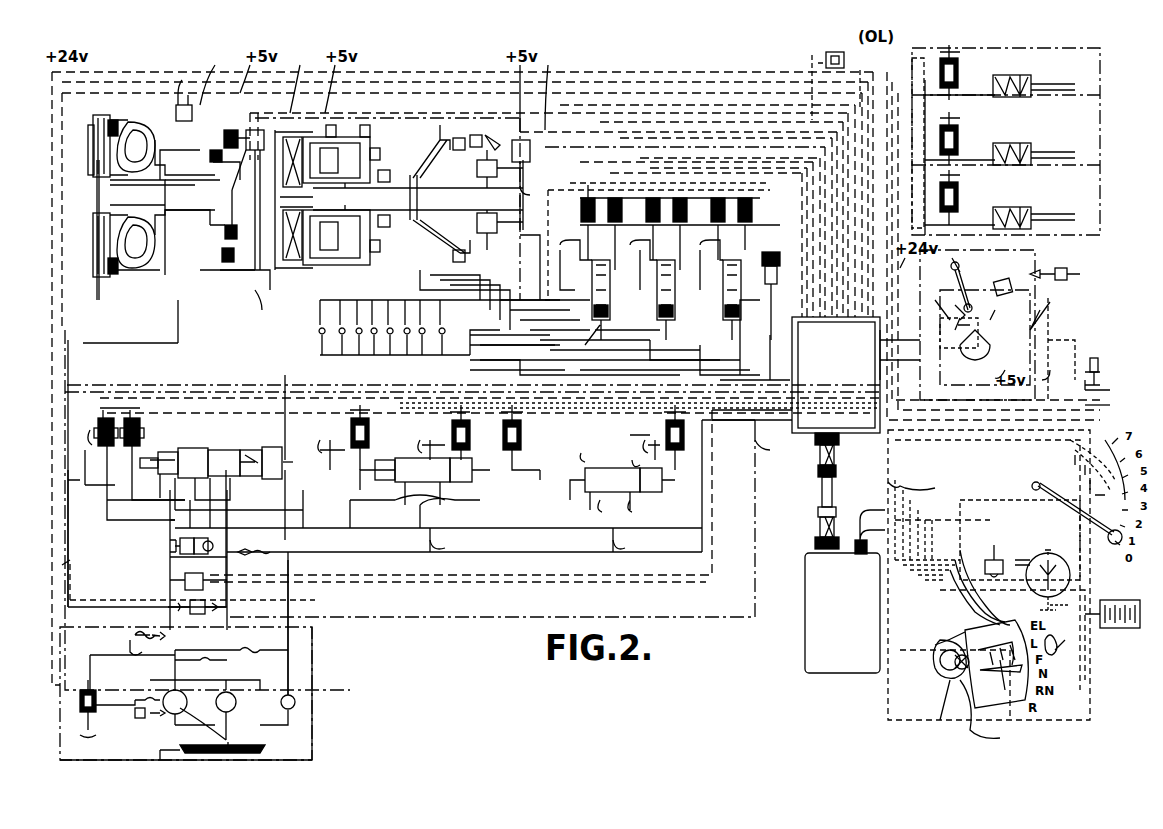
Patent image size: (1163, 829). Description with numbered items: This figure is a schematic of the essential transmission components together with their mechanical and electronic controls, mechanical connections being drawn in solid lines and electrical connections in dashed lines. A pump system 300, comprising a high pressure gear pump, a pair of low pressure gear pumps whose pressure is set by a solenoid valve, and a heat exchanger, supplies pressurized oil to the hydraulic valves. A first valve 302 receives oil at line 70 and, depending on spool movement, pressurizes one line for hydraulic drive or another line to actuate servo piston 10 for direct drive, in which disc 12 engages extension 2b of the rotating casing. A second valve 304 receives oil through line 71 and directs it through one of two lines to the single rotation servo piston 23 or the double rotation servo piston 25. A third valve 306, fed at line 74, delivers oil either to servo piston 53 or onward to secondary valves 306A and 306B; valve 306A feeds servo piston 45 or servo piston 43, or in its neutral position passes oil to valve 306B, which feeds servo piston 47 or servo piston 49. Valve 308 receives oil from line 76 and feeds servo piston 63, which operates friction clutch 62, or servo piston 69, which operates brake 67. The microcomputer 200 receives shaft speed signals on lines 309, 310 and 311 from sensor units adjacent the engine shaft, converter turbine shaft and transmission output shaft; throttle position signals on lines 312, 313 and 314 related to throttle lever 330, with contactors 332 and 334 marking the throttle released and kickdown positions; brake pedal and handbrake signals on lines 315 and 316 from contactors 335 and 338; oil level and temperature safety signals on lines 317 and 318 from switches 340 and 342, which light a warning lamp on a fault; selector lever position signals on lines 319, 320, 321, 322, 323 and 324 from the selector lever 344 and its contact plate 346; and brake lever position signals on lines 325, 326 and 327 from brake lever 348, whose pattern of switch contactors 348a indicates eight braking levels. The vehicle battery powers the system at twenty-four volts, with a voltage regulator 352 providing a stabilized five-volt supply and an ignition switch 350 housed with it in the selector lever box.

The servo piston 10 is at (96, 118).
The disc 12 is at (95, 158).
The extension of the rotating casing 2b is at (112, 118).
The single rotation servo piston 23 is at (210, 158).
The double rotation servo piston 25 is at (246, 135).
The servo piston 43 is at (336, 201).
The servo piston 45 is at (365, 140).
The servo piston 47 is at (395, 135).
The servo piston 49 is at (382, 152).
The servo piston 53 is at (307, 198).
The friction clutch 62 is at (445, 125).
The servo piston 63 is at (436, 180).
The brake 67 is at (475, 135).
The servo piston 69 is at (492, 135).
The line 70 is at (215, 505).
The line 71 is at (451, 543).
The line 74 is at (636, 543).
The line 76 is at (758, 290).
The microcomputer 200 is at (860, 418).
The pump system 300 is at (320, 700).
The first valve 302 is at (285, 420).
The second valve 304 is at (440, 458).
The third valve 306 is at (648, 495).
The secondary valve 306A is at (600, 340).
The secondary valve 306B is at (666, 340).
The valve 308 is at (740, 340).
The line 309 is at (218, 76).
The line 310 is at (305, 80).
The line 311 is at (564, 89).
The line 312 is at (947, 285).
The line 313 is at (1030, 330).
The line 314 is at (962, 307).
The line 315 is at (1062, 362).
The line 316 is at (1095, 412).
The line 317 is at (836, 87).
The line 318 is at (755, 440).
The line 319 is at (910, 705).
The line 320 is at (920, 718).
The line 321 is at (962, 548).
The line 322 is at (967, 581).
The line 323 is at (962, 580).
The line 324 is at (935, 648).
The line 325 is at (893, 460).
The line 326 is at (895, 482).
The line 327 is at (927, 491).
The throttle lever 330 is at (960, 268).
The contactor 332 is at (959, 334).
The contactor 334 is at (970, 352).
The contactor 335 is at (1068, 276).
The contactor 338 is at (1095, 388).
The oil level switch 340 is at (845, 60).
The temperature safety switch 342 is at (185, 573).
The selector lever 344 is at (1065, 640).
The contact plate 346 is at (985, 720).
The brake lever 348 is at (1035, 488).
The switch contactors 348a is at (1064, 472).
The ignition switch 350 is at (1025, 530).
The voltage regulator 352 is at (1020, 560).